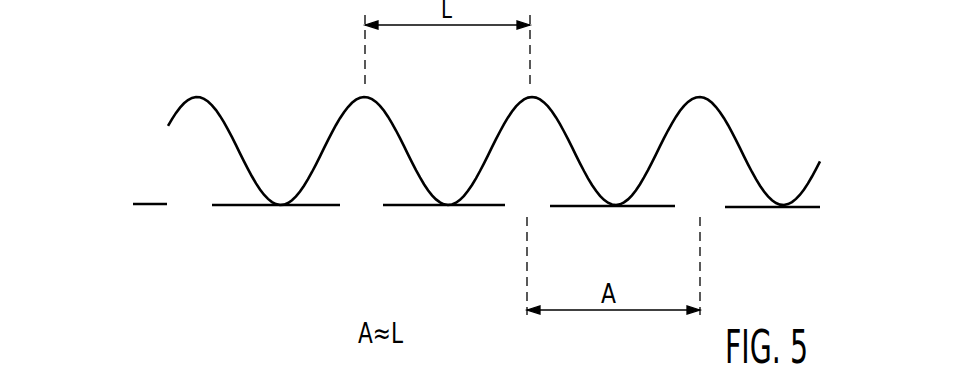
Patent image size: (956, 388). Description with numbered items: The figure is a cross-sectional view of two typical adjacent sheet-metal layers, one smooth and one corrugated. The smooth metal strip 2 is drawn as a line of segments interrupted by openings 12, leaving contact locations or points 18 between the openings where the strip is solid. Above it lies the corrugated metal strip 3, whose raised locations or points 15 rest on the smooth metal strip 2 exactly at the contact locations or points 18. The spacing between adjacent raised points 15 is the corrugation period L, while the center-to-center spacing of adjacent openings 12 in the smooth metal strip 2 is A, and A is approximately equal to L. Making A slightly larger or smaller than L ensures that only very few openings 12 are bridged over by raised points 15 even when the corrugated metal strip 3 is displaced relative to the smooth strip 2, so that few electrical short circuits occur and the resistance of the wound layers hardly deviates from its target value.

The smooth metal strip 2 is at (815, 221).
The corrugated metal strip 3 is at (731, 120).
The openings 12 is at (189, 217).
The raised locations or points 15 is at (700, 95).
The contact locations or points 18 is at (278, 216).